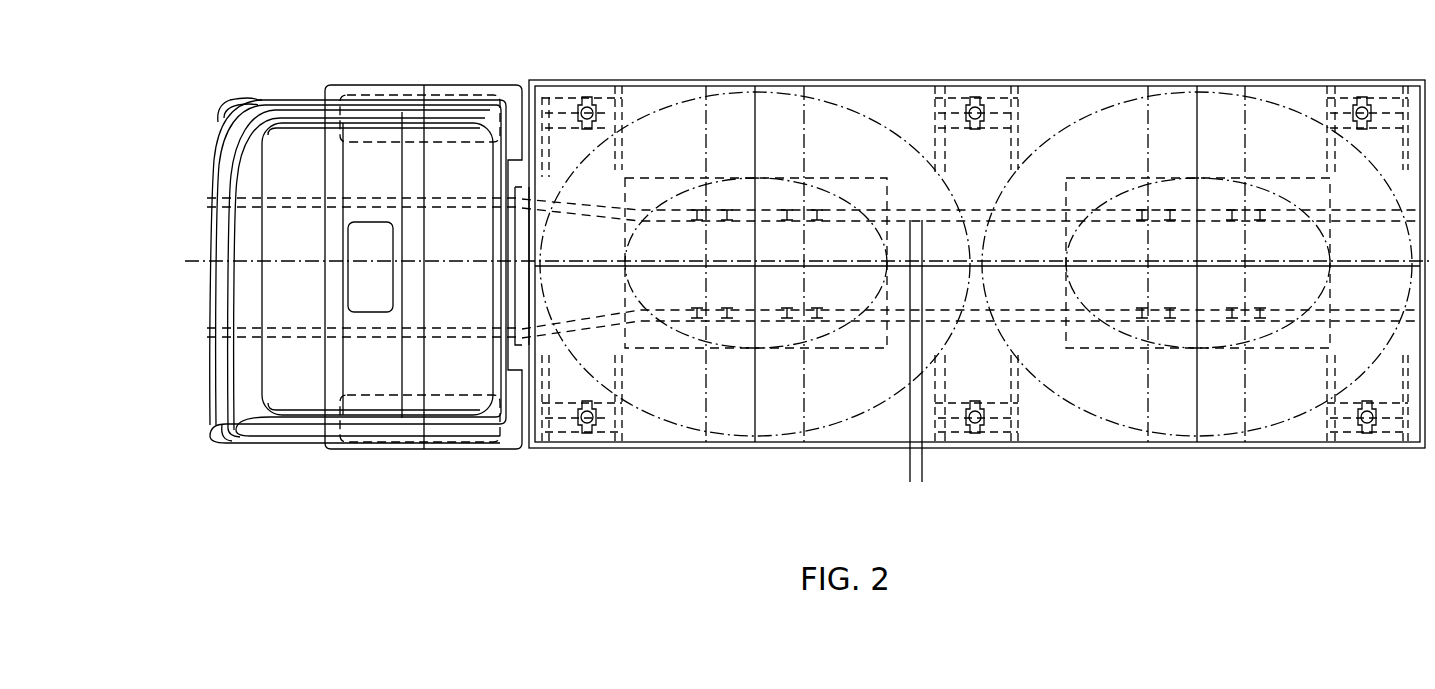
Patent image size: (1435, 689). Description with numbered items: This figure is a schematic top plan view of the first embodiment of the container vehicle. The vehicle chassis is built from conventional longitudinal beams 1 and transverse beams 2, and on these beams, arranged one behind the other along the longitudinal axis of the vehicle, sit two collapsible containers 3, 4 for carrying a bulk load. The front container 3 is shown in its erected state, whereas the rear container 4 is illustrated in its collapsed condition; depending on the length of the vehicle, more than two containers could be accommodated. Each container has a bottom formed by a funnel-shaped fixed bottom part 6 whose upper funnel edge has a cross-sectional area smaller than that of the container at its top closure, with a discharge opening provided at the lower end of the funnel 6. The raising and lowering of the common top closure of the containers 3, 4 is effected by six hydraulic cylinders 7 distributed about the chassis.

The longitudinal beams 1 is at (922, 482).
The transverse beams 2 is at (622, 418).
The front container 3 is at (838, 138).
The rear container 4 is at (1097, 133).
The funnel-shaped fixed bottom part 6 is at (877, 220).
The hydraulic cylinders 7 is at (587, 97).